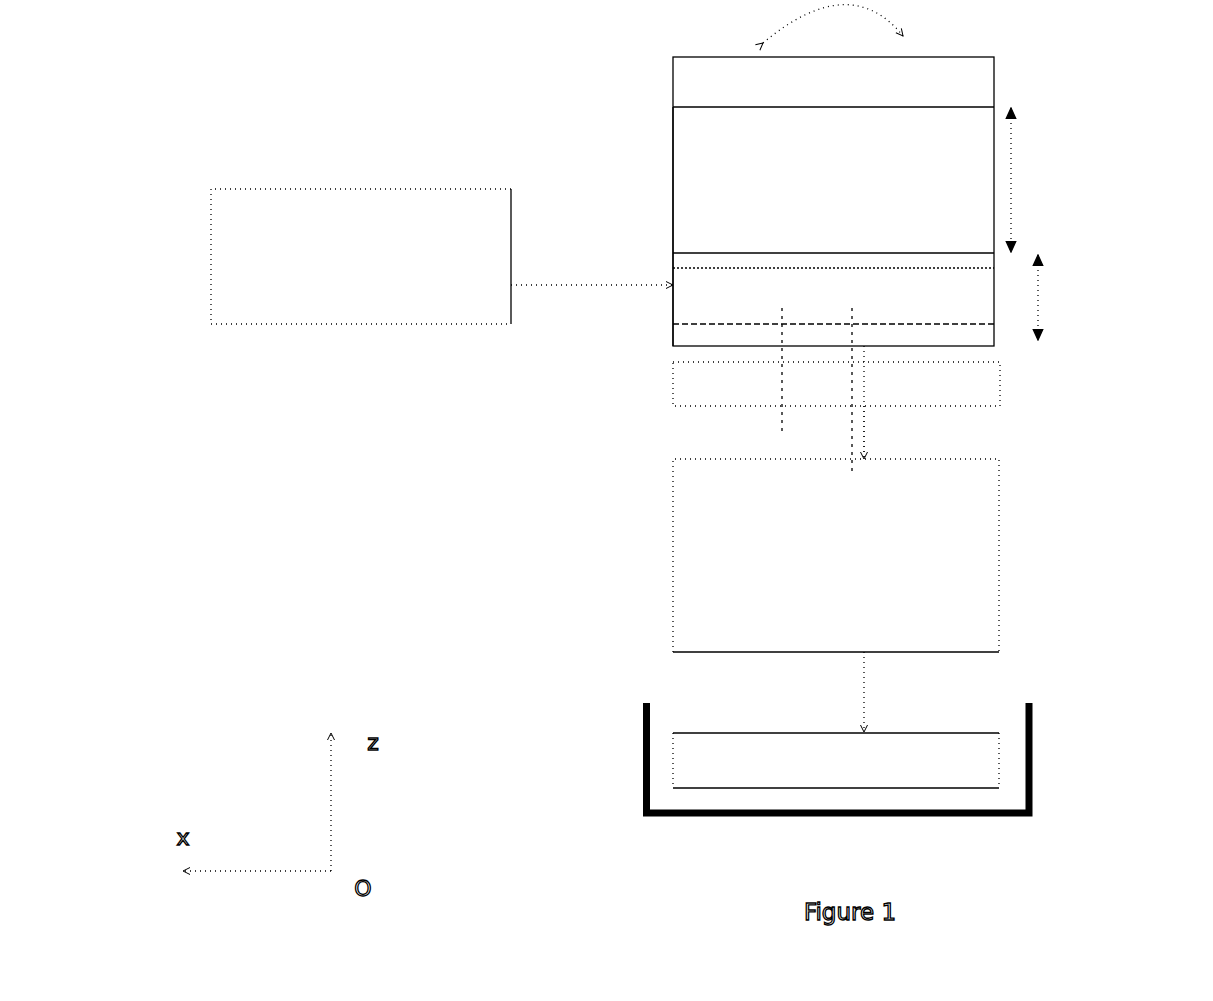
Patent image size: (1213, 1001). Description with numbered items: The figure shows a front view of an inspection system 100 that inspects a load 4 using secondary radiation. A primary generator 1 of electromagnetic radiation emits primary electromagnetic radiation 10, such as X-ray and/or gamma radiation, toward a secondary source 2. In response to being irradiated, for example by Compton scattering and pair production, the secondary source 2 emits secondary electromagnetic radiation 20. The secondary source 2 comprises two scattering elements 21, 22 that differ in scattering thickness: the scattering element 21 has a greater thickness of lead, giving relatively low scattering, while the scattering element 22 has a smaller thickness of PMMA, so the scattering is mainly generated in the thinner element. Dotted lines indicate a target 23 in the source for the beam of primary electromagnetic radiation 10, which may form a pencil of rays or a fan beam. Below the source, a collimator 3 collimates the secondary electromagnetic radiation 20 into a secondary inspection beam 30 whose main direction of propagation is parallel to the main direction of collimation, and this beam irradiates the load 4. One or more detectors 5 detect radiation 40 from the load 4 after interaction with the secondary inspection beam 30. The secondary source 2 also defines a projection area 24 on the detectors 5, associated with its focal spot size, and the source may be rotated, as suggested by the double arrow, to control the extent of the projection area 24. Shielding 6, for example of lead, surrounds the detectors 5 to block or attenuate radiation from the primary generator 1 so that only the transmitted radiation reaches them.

The primary generator 1 is at (361, 256).
The secondary source 2 is at (1055, 122).
The collimator 3 is at (836, 384).
The load 4 is at (836, 555).
The detectors 5 is at (836, 760).
The shielding 6 is at (643, 772).
The primary electromagnetic radiation 10 is at (592, 283).
The secondary electromagnetic radiation 20 is at (864, 356).
The scattering element 21 is at (811, 180).
The scattering element 22 is at (833, 296).
The target 23 is at (727, 303).
The projection area 24 is at (728, 718).
The secondary inspection beam 30 is at (864, 423).
The radiation from the load 40 is at (864, 693).
The inspection system 100 is at (1082, 199).